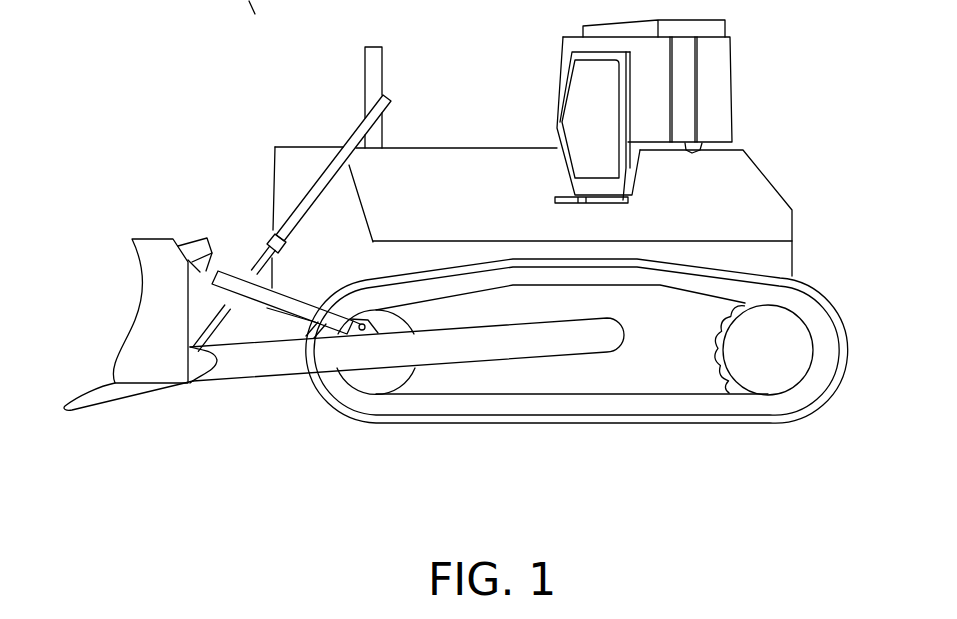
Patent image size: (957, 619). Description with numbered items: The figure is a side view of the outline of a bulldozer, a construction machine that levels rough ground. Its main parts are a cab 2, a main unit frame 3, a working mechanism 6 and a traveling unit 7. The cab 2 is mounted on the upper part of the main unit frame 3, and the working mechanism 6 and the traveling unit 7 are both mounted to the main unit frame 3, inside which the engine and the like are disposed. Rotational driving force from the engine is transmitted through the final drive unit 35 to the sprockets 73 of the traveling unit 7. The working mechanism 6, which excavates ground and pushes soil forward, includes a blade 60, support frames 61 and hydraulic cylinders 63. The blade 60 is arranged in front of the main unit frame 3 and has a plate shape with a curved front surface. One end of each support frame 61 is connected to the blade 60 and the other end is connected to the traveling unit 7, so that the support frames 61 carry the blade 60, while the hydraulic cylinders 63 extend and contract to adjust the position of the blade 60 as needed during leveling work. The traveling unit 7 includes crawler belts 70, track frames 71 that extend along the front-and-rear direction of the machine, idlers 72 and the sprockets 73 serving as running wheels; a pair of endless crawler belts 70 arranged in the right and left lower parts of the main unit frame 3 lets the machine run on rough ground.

The cab 2 is at (720, 76).
The main unit frame 3 is at (510, 173).
The working mechanism 6 is at (170, 406).
The traveling unit 7 is at (467, 440).
The final drive unit 35 is at (788, 373).
The blade 60 is at (167, 239).
The support frame 61 is at (254, 362).
The hydraulic cylinder 63 is at (348, 141).
The crawler belt 70 is at (562, 416).
The track frame 71 is at (650, 373).
The idler 72 is at (375, 383).
The sprocket 73 is at (723, 392).